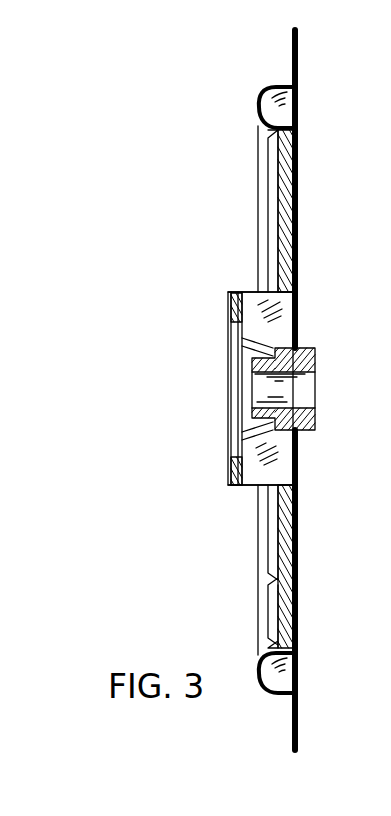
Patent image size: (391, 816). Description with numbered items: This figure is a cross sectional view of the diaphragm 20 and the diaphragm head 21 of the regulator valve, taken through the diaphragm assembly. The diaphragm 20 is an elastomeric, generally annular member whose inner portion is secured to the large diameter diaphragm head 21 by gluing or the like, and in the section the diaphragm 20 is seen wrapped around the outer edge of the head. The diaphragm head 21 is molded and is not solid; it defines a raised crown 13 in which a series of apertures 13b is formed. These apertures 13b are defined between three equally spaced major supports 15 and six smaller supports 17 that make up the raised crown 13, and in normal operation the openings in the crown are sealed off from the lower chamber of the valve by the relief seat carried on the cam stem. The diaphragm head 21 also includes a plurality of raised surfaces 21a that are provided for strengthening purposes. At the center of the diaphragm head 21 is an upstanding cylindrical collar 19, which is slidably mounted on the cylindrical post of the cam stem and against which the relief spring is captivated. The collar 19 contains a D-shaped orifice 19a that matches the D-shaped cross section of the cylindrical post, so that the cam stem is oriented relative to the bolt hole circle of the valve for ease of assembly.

The raised crown 13 is at (228, 444).
The apertures 13b is at (242, 291).
The major supports 15 is at (297, 333).
The smaller supports 17 is at (262, 285).
The cylindrical collar 19 is at (317, 362).
The D-shaped orifice 19a is at (262, 392).
The diaphragm 20 is at (257, 106).
The diaphragm head 21 is at (267, 241).
The raised surfaces 21a is at (281, 206).